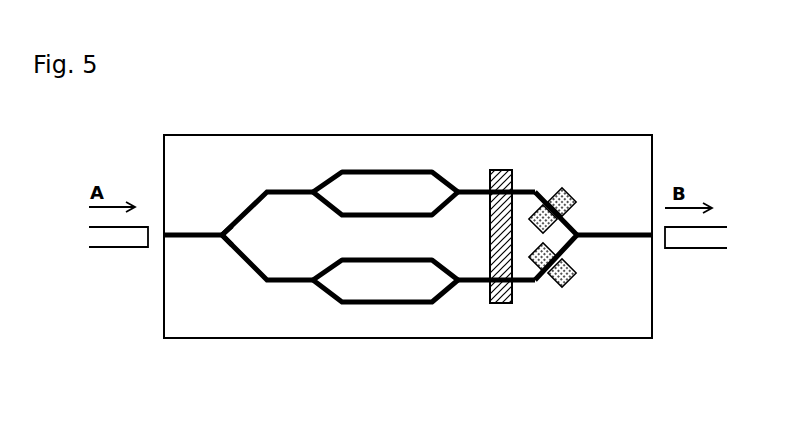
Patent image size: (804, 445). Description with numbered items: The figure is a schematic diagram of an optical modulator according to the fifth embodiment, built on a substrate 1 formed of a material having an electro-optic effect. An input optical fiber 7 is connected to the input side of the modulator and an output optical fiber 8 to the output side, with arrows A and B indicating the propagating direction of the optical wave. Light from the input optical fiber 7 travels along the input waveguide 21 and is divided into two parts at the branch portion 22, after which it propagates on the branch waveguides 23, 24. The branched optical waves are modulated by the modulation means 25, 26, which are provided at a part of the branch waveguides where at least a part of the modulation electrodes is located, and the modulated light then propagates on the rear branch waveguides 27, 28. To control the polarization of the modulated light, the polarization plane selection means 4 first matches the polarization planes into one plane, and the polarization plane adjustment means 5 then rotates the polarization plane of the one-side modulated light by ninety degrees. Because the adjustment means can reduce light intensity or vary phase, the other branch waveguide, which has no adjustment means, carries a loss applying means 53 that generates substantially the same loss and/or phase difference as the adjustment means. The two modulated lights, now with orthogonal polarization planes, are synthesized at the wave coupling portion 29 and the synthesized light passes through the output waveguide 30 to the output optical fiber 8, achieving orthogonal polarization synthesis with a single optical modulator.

The substrate 1 is at (535, 152).
The polarization plane selection means 4 is at (498, 303).
The polarization plane adjustment means 5 is at (567, 187).
The input optical fiber 7 is at (113, 236).
The output optical fiber 8 is at (695, 238).
The input waveguide 21 is at (192, 237).
The branch portion 22 is at (221, 233).
The branch waveguide 23 is at (288, 192).
The branch waveguide 24 is at (292, 280).
The modulation means 25 is at (388, 160).
The modulation means 26 is at (392, 313).
The rear branch waveguide 27 is at (475, 236).
The rear branch waveguide 28 is at (475, 236).
The wave coupling portion 29 is at (577, 237).
The output waveguide 30 is at (617, 235).
The loss applying means 53 is at (567, 280).